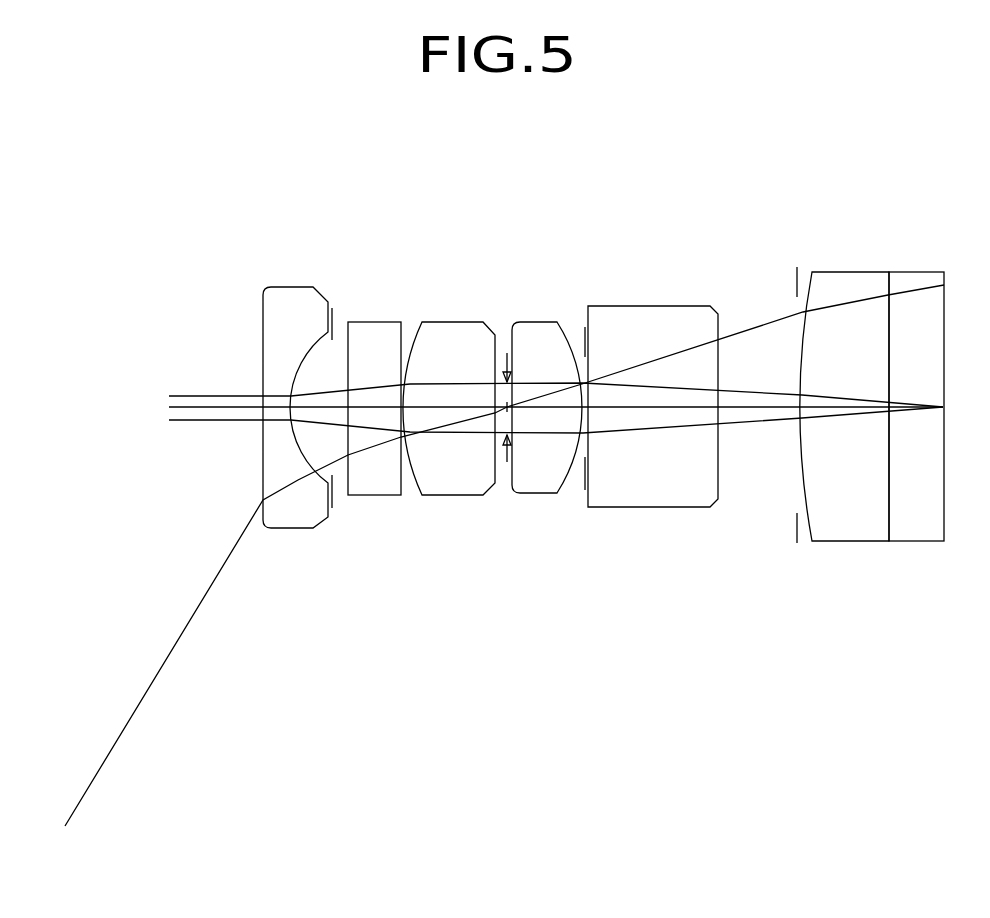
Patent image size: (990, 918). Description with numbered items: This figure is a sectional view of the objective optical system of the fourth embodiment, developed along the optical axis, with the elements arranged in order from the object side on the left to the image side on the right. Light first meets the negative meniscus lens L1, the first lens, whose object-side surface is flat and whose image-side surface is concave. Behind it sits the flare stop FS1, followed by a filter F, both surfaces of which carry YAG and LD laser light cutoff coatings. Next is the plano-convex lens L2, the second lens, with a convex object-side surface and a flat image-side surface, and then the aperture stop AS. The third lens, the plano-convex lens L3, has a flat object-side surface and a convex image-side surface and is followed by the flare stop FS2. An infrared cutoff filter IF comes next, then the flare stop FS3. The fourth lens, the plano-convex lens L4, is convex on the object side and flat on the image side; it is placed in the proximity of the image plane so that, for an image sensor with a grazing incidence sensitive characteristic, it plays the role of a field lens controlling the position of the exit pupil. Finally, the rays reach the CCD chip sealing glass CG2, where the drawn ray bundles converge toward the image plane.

The negative meniscus lens L1 is at (292, 287).
The filter F is at (372, 322).
The plano-convex lens L2 is at (450, 322).
The plano-convex lens L3 is at (535, 322).
The infrared cutoff filter IF is at (667, 306).
The plano-convex lens L4 is at (850, 272).
The CCD chip sealing glass CG2 is at (912, 272).
The flare stop FS1 is at (337, 495).
The aperture stop AS is at (505, 462).
The flare stop FS2 is at (585, 490).
The flare stop FS3 is at (797, 530).